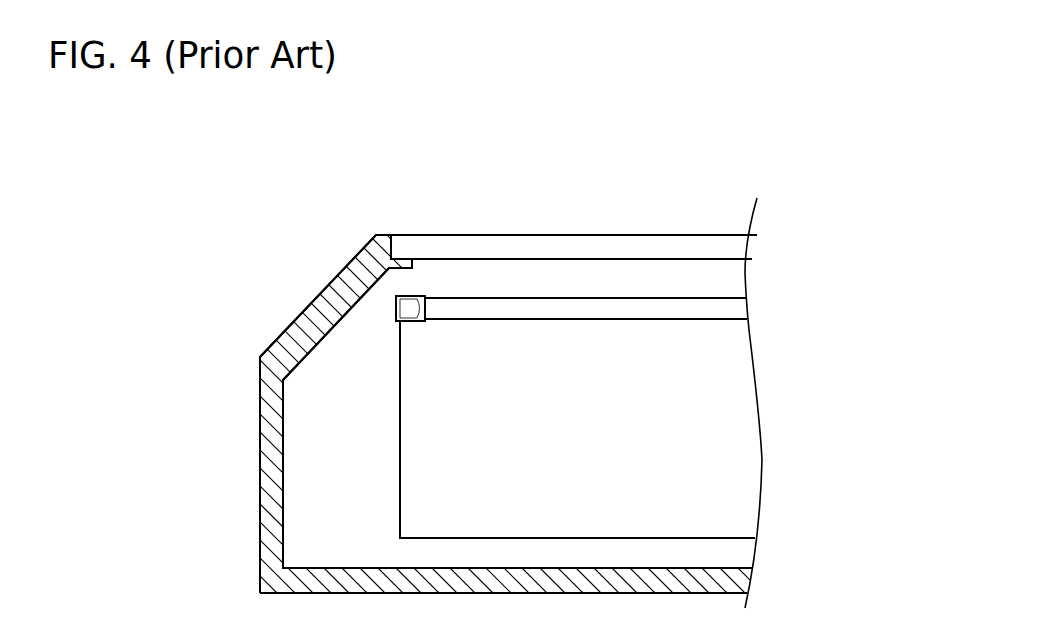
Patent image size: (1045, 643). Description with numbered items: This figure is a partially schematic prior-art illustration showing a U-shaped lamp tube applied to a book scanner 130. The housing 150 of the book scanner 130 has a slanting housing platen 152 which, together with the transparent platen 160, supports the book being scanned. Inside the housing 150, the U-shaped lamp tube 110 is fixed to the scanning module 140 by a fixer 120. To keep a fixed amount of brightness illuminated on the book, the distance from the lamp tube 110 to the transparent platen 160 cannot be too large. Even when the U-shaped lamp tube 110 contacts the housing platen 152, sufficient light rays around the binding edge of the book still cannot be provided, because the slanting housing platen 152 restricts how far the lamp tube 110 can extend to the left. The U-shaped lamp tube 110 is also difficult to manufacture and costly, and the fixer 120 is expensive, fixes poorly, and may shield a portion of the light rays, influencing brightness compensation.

The U-shaped lamp tube 110 is at (717, 295).
The fixer 120 is at (396, 310).
The book scanner 130 is at (571, 171).
The scanning module 140 is at (394, 512).
The housing 150 is at (257, 433).
The housing platen 152 is at (283, 334).
The transparent platen 160 is at (681, 247).